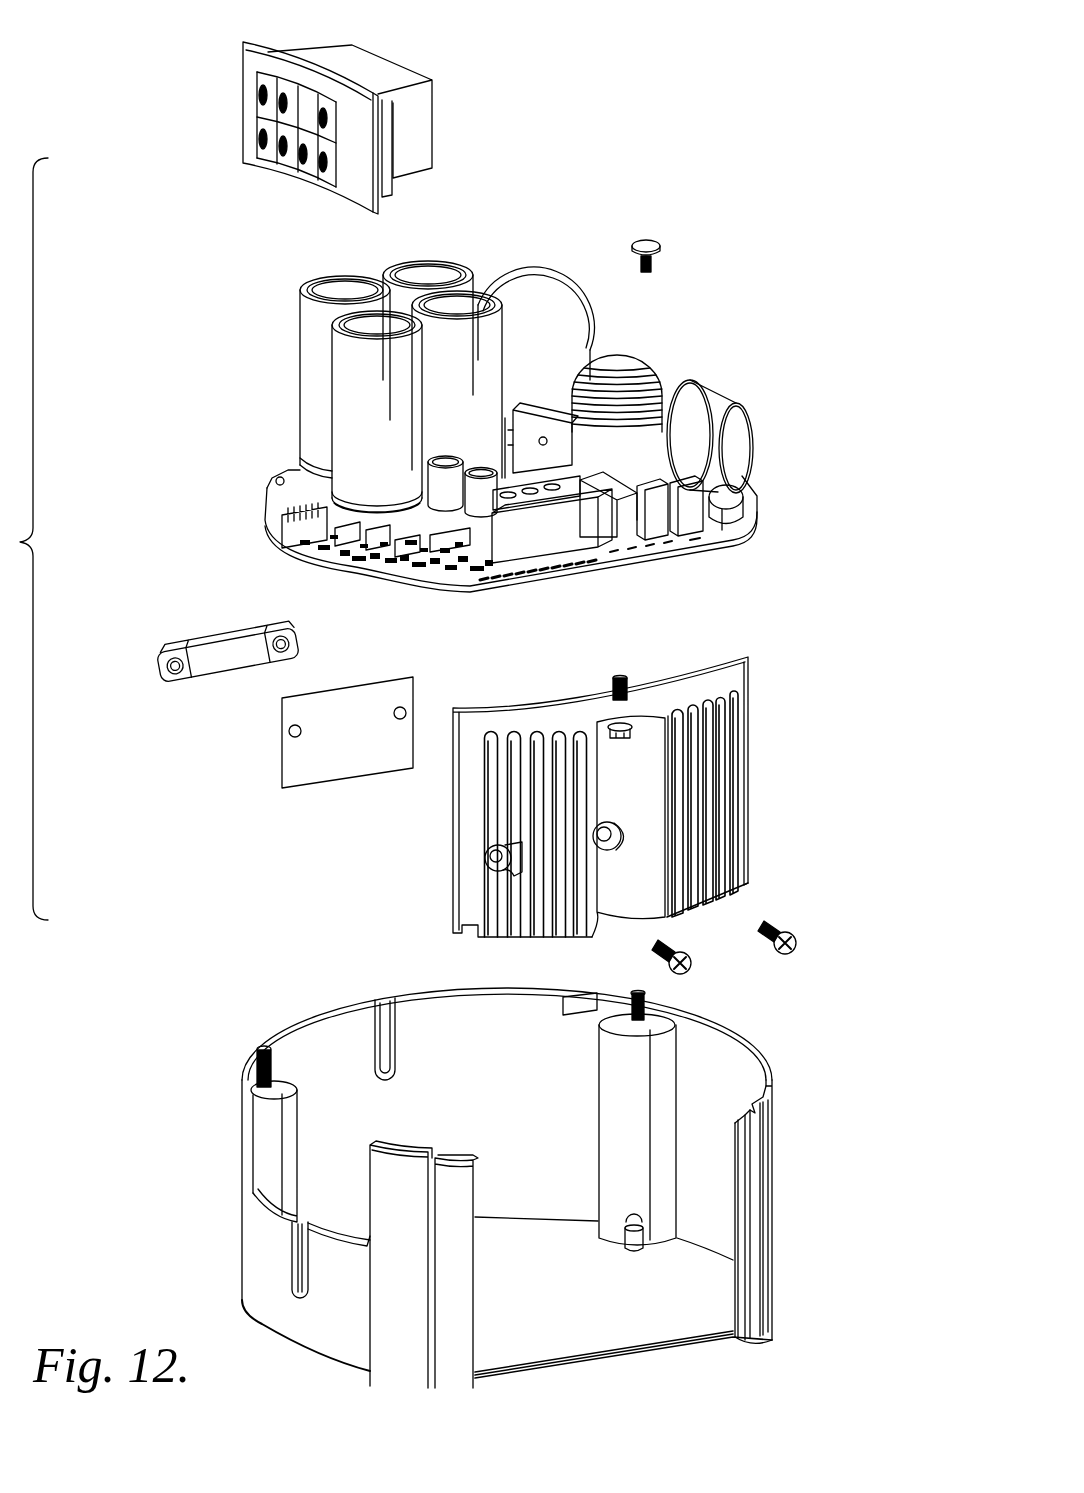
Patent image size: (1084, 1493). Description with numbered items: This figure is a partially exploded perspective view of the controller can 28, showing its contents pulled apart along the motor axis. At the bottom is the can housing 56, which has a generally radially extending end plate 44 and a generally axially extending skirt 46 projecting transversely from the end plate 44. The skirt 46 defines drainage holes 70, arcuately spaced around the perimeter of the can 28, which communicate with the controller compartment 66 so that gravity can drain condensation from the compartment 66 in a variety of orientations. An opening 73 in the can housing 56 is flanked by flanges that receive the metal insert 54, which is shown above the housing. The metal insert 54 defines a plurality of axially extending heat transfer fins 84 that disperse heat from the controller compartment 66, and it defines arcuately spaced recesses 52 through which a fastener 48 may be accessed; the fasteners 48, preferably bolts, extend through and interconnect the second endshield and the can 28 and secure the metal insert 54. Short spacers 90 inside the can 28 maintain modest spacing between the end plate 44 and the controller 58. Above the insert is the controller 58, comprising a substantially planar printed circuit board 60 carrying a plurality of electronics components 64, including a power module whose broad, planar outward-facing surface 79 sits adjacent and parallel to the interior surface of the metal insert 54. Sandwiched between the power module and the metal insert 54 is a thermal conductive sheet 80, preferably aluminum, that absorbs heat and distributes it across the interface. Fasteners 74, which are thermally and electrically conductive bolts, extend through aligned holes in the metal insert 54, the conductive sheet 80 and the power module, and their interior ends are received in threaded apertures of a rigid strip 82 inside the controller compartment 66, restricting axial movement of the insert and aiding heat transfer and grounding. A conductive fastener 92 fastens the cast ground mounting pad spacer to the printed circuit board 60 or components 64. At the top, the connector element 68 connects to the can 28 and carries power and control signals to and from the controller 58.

The controller can 28 is at (503, 1180).
The end plate 44 is at (593, 1357).
The skirt 46 is at (356, 1326).
The fasteners 48 is at (617, 675).
The recesses 52 is at (620, 945).
The metal insert 54 is at (669, 790).
The can housing 56 is at (470, 1180).
The controller 58 is at (540, 421).
The printed circuit board 60 is at (290, 472).
The electronics components 64 is at (312, 330).
The controller compartment 66 is at (706, 1080).
The connector element 68 is at (425, 111).
The drainage holes 70 is at (378, 995).
The opening 73 is at (701, 1318).
The fasteners 74 is at (777, 958).
The outward-facing surface 79 is at (552, 532).
The thermal conductive sheet 80 is at (295, 757).
The rigid strip 82 is at (222, 652).
The heat transfer fins 84 is at (754, 828).
The spacers 90 is at (635, 1242).
The fastener 92 is at (657, 241).